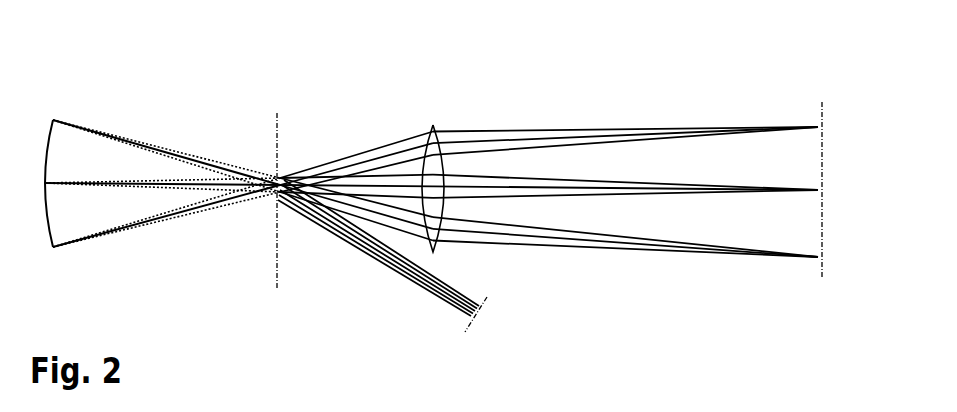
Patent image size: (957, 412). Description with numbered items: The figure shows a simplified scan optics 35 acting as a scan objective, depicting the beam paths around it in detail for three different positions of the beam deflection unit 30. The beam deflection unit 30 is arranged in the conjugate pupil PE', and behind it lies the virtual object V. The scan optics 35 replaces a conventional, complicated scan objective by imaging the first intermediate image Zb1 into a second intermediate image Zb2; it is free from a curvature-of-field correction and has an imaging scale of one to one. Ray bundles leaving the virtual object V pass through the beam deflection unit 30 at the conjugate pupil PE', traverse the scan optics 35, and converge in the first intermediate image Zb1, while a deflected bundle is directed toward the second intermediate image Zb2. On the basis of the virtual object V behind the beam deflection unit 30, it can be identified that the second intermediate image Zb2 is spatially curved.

The virtual object V is at (50, 123).
The conjugate pupil PE' is at (265, 176).
The beam deflection unit 30 is at (293, 167).
The scan optics 35 is at (432, 123).
The first intermediate image Zb1 is at (822, 102).
The second intermediate image Zb2 is at (466, 326).